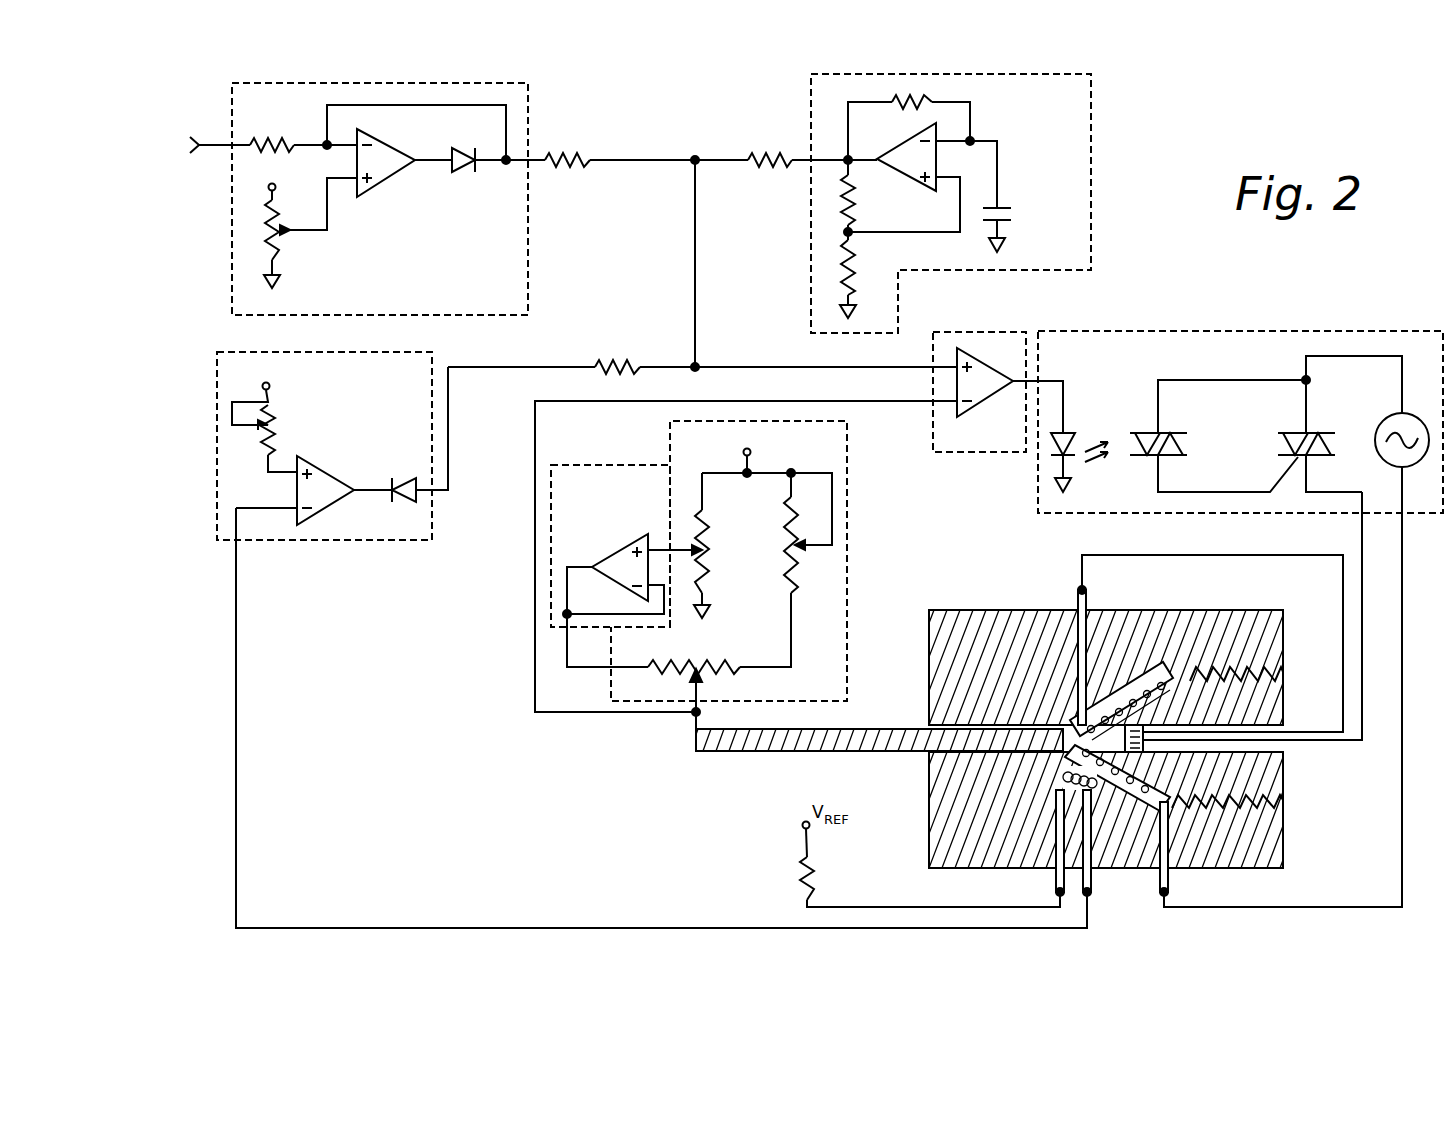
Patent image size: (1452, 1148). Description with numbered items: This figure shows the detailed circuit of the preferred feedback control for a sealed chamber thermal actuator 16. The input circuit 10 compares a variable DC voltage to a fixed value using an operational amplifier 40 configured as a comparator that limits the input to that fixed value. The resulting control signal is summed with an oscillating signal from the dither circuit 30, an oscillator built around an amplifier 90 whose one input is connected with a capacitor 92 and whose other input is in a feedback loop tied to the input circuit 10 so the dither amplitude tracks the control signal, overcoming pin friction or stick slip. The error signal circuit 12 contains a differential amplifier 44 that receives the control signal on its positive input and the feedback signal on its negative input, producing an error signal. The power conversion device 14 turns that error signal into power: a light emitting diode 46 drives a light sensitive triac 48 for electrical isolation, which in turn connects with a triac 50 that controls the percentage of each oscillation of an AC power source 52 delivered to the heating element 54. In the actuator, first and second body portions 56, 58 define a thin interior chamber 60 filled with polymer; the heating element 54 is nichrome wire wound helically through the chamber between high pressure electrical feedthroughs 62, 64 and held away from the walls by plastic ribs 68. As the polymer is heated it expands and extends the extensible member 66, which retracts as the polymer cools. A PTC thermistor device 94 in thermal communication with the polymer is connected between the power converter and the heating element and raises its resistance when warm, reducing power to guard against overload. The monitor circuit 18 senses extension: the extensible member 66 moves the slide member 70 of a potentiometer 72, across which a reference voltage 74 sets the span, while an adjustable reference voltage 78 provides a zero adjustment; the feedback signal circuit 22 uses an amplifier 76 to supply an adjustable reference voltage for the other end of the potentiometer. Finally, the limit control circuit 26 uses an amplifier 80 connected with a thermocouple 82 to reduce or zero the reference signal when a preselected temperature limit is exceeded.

The input circuit 10 is at (417, 199).
The operational amplifier 40 is at (386, 182).
The dither circuit 30 is at (954, 203).
The amplifier 90 is at (905, 172).
The capacitor 92 is at (1003, 200).
The error signal circuit 12 is at (998, 373).
The differential amplifier 44 is at (986, 405).
The power conversion device 14 is at (1240, 400).
The light emitting diode 46 is at (1070, 433).
The light sensitive triac 48 is at (1166, 433).
The triac 50 is at (1298, 433).
The AC power source 52 is at (1386, 422).
The limit control circuit 26 is at (428, 446).
The amplifier 80 is at (325, 470).
The feedback signal circuit 22 is at (626, 547).
The amplifier 76 is at (622, 540).
The feedback monitor circuit 18 is at (761, 566).
The adjustable reference voltage 78 is at (725, 542).
The reference voltage 74 is at (772, 576).
The potentiometer 72 is at (718, 655).
The slide member 70 is at (705, 690).
The extensible member 66 is at (862, 731).
The thermal actuator 16 is at (1017, 734).
The high pressure electrical feedthrough 62 is at (1078, 600).
The heating element 54 is at (1178, 692).
The plastic ribs 68 is at (1170, 688).
The first body portion 56 is at (1262, 636).
The second body portion 58 is at (1255, 705).
The PTC thermistor device 94 is at (1150, 750).
The thermocouple 82 is at (1065, 770).
The interior chamber 60 is at (1123, 785).
The high pressure electrical feedthrough 64 is at (1172, 882).